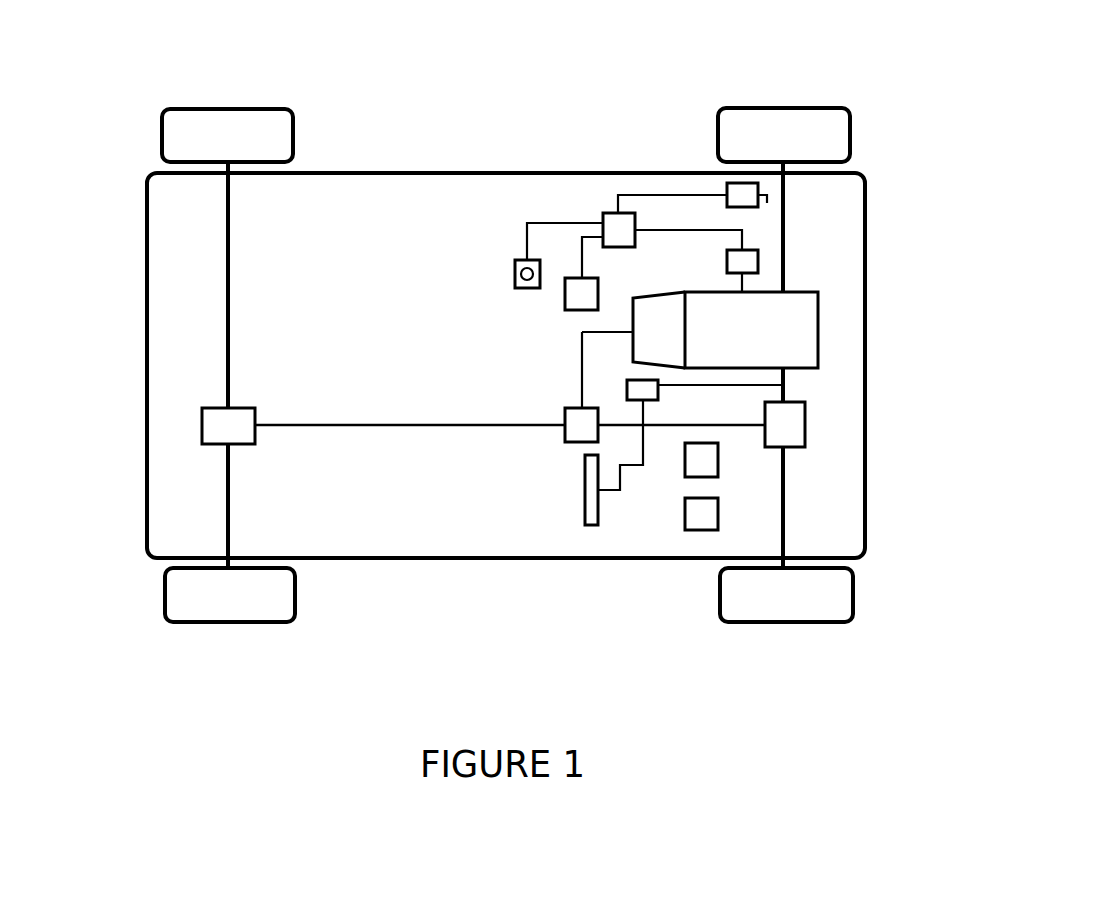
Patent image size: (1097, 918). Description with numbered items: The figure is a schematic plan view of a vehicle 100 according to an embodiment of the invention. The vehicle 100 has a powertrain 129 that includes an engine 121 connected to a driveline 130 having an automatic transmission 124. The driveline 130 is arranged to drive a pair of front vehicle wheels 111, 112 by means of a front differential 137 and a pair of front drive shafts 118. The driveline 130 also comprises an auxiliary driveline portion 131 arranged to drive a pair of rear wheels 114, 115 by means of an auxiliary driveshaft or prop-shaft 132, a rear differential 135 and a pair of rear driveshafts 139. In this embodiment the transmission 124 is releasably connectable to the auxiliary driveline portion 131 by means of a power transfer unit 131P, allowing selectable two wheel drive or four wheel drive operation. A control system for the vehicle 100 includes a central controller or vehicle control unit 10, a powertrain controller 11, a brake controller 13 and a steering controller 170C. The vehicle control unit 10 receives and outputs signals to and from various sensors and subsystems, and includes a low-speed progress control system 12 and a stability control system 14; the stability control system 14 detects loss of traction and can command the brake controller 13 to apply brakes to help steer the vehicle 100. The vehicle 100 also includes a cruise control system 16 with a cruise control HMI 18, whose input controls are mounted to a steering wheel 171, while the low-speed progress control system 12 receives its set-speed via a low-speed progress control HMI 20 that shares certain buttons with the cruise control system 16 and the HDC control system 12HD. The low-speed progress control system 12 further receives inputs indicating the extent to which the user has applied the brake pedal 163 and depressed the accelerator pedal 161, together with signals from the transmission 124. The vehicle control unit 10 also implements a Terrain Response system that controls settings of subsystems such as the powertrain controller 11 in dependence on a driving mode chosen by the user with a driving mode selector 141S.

The vehicle 100 is at (960, 130).
The front vehicle wheel 111 is at (837, 112).
The front vehicle wheel 112 is at (833, 608).
The rear wheel 114 is at (188, 120).
The rear wheel 115 is at (192, 610).
The front drive shafts 118 is at (783, 213).
The rear driveshafts 139 is at (227, 272).
The rear differential 135 is at (207, 428).
The front differential 137 is at (798, 423).
The power transfer unit 131P is at (573, 437).
The auxiliary driveshaft or prop-shaft 132 is at (363, 427).
The auxiliary driveline portion 131 is at (397, 588).
The engine 121 is at (810, 317).
The automatic transmission 124 is at (658, 308).
The vehicle control unit 10 is at (588, 168).
The low-speed progress control system 12 is at (619, 230).
The stability control system 14 is at (619, 230).
The cruise control system 16 is at (619, 230).
The HDC control system 12HD is at (610, 213).
The brake controller 13 is at (747, 192).
The powertrain controller 11 is at (753, 262).
The driving mode selector 141S is at (520, 262).
The cruise control HMI 18 is at (541, 219).
The low-speed progress control HMI 20 is at (572, 280).
The steering controller 170C is at (627, 390).
The steering wheel 171 is at (590, 527).
The brake pedal 163 is at (692, 463).
The accelerator pedal 161 is at (700, 522).
The powertrain 129 is at (960, 362).
The driveline 130 is at (960, 565).